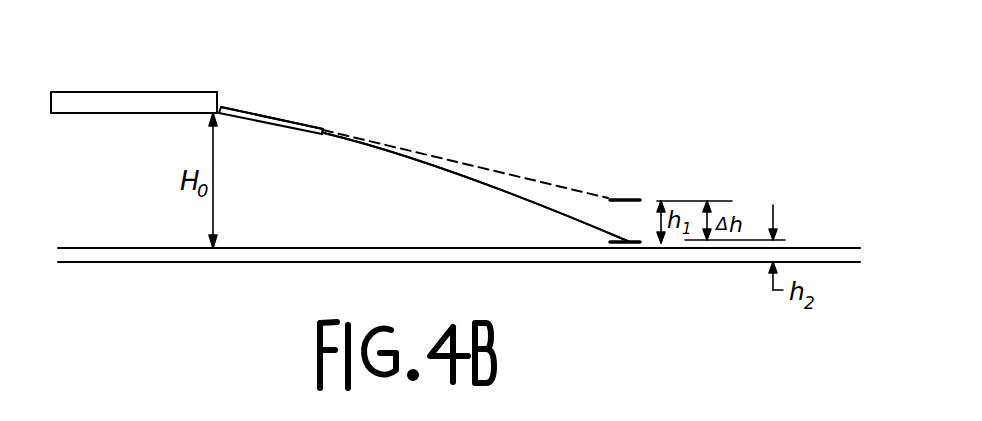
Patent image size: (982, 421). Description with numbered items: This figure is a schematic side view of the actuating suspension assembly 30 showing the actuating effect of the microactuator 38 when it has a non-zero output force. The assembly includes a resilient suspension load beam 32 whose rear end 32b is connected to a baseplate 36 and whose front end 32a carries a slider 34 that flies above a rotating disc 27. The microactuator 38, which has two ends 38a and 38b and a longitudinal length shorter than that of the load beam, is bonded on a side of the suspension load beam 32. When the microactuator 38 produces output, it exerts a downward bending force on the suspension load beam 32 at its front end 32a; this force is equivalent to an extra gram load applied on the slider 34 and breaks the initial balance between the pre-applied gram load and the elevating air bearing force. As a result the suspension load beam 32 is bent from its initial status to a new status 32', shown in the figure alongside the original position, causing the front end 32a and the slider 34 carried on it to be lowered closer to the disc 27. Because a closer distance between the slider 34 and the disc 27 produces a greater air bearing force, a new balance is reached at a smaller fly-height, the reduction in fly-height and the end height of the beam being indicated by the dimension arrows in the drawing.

The disc 27 is at (185, 263).
The actuating suspension assembly 30 is at (436, 126).
The suspension load beam 32 is at (477, 187).
The bent suspension load beam 32' is at (477, 187).
The front end of suspension load beam 32a is at (602, 185).
The rear end of suspension load beam 32b is at (219, 92).
The slider 34 is at (623, 200).
The baseplate 36 is at (94, 91).
The microactuator 38 is at (282, 119).
The end of microactuator 38a is at (323, 128).
The end of microactuator 38b is at (257, 107).